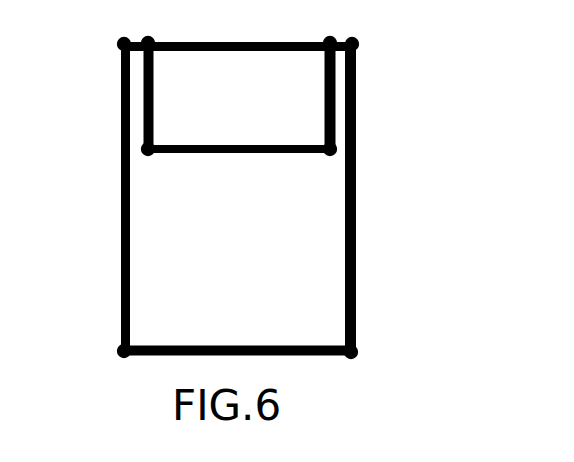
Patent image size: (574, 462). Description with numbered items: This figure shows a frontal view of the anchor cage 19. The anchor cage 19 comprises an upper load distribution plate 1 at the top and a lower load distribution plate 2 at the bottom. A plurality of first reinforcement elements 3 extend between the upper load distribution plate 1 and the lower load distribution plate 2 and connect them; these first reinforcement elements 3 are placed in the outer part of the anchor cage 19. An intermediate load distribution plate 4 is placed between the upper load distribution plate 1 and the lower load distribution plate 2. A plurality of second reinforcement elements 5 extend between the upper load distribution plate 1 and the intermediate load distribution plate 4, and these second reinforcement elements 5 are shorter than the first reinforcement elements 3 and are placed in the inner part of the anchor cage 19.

The upper load distribution plate 1 is at (279, 186).
The lower load distribution plate 2 is at (357, 347).
The first reinforcement elements 3 is at (352, 257).
The intermediate load distribution plate 4 is at (355, 148).
The second reinforcement elements 5 is at (333, 102).
The anchor cage 19 is at (400, 205).